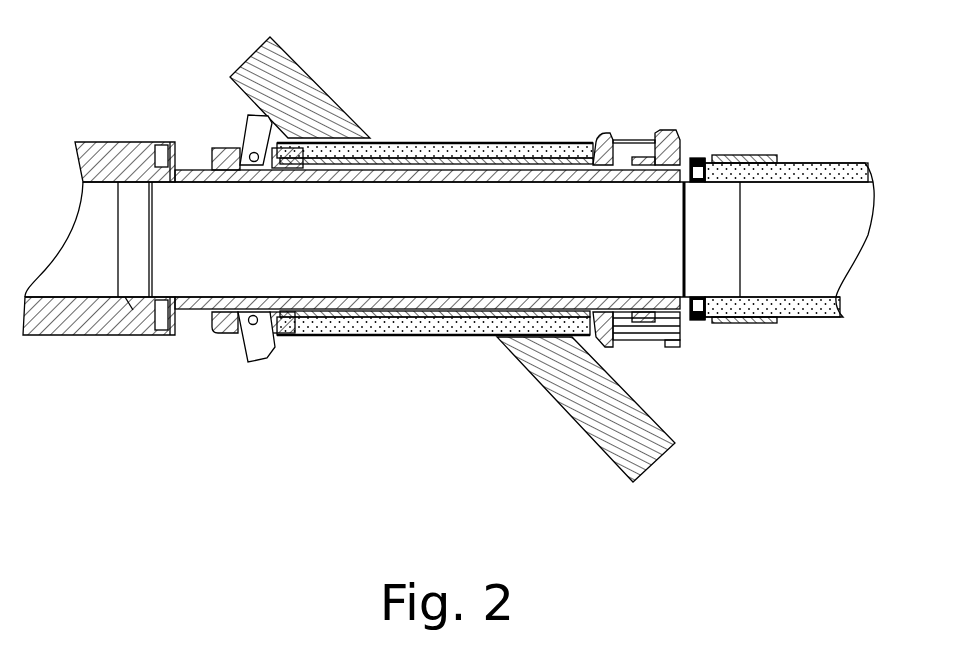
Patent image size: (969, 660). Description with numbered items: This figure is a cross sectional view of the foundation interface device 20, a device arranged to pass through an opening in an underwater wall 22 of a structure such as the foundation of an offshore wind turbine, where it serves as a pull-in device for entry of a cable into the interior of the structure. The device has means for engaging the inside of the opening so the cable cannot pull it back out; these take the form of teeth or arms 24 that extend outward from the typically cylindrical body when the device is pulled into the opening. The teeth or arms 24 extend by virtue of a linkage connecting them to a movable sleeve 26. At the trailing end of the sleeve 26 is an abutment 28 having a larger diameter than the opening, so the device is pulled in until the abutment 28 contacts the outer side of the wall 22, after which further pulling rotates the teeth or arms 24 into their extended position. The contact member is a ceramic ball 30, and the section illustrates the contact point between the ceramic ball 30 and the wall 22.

The foundation interface device 20 is at (518, 113).
The underwater wall 22 is at (307, 100).
The teeth or arms 24 is at (253, 137).
The movable sleeve 26 is at (455, 150).
The abutment 28 is at (605, 138).
The ceramic ball 30 is at (270, 360).